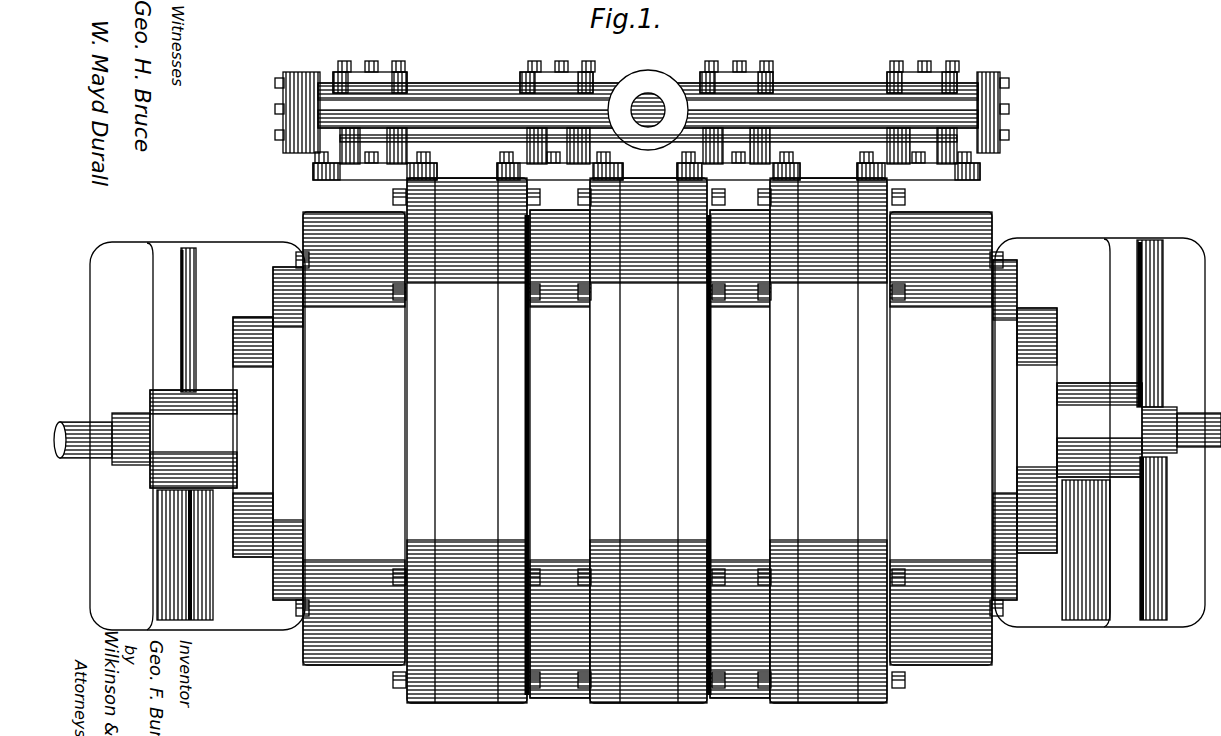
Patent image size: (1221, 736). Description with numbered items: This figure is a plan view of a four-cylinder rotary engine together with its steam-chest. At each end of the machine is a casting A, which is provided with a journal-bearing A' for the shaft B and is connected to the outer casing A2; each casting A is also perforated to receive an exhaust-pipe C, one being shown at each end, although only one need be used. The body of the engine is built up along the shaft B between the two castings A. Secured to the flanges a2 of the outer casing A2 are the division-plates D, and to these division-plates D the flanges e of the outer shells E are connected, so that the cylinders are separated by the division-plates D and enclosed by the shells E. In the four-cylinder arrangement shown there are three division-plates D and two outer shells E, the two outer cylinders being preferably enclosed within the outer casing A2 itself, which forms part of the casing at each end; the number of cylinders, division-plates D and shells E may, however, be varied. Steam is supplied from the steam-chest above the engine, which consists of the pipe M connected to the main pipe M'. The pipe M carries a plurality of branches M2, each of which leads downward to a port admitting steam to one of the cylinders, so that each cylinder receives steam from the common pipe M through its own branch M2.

The casting A is at (647, 416).
The journal-bearing A' is at (646, 409).
The outer casing A2 is at (250, 488).
The shaft B is at (130, 427).
The exhaust-pipe C is at (75, 420).
The division-plate D is at (647, 440).
The outer shell E is at (650, 454).
The flange e is at (600, 332).
The flange a2 is at (417, 337).
The pipe M is at (642, 97).
The main pipe M' is at (648, 94).
The branch M2 is at (527, 138).